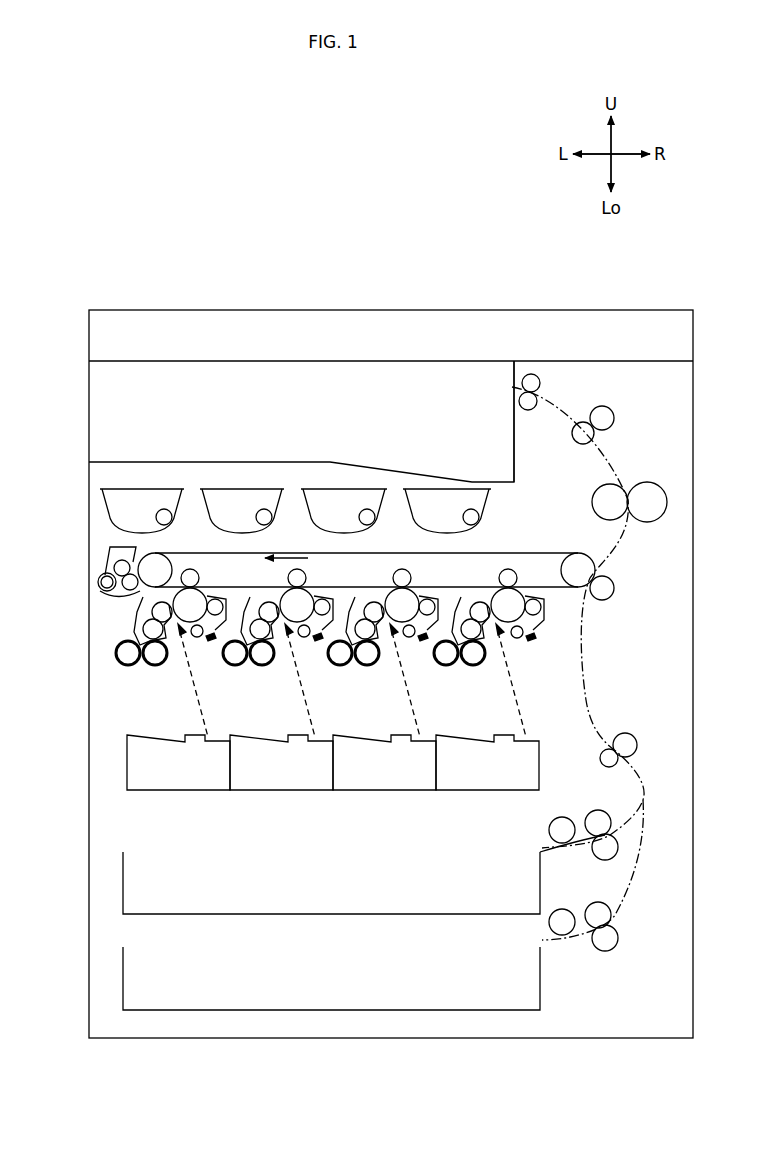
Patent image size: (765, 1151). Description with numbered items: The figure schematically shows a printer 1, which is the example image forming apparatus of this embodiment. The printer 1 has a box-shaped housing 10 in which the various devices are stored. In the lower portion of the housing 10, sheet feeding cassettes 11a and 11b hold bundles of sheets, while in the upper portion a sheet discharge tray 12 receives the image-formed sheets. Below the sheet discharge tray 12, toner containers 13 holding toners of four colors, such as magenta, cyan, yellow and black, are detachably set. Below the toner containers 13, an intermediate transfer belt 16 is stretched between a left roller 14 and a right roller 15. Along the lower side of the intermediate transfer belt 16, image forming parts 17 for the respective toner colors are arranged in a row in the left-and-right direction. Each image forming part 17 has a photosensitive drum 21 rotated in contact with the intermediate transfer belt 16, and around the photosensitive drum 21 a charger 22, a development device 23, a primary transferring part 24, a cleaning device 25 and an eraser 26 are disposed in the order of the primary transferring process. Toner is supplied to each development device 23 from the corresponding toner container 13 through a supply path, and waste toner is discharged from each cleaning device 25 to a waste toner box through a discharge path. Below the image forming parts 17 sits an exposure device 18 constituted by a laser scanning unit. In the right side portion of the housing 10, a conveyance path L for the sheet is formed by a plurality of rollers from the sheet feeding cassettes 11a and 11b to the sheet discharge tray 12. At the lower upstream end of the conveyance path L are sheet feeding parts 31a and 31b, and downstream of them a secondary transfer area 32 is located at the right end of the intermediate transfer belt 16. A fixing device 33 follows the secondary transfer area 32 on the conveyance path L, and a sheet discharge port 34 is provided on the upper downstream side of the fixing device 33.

The printer 1 is at (91, 300).
The housing 10 is at (89, 437).
The sheet feeding cassette 11a is at (123, 886).
The sheet feeding cassette 11b is at (123, 982).
The sheet discharge tray 12 is at (456, 474).
The toner container 13 is at (135, 487).
The left roller 14 is at (162, 562).
The right roller 15 is at (580, 563).
The intermediate transfer belt 16 is at (517, 552).
The image forming part 17 is at (172, 668).
The exposure device 18 is at (127, 765).
The photosensitive drum 21 is at (498, 600).
The charger 22 is at (518, 639).
The development device 23 is at (453, 670).
The primary transferring part 24 is at (524, 580).
The cleaning device 25 is at (545, 608).
The eraser 26 is at (535, 640).
The sheet feeding part 31a is at (624, 838).
The sheet feeding part 31b is at (624, 931).
The secondary transfer area 32 is at (620, 598).
The fixing device 33 is at (638, 474).
The sheet discharge port 34 is at (510, 388).
The conveyance path L is at (590, 701).